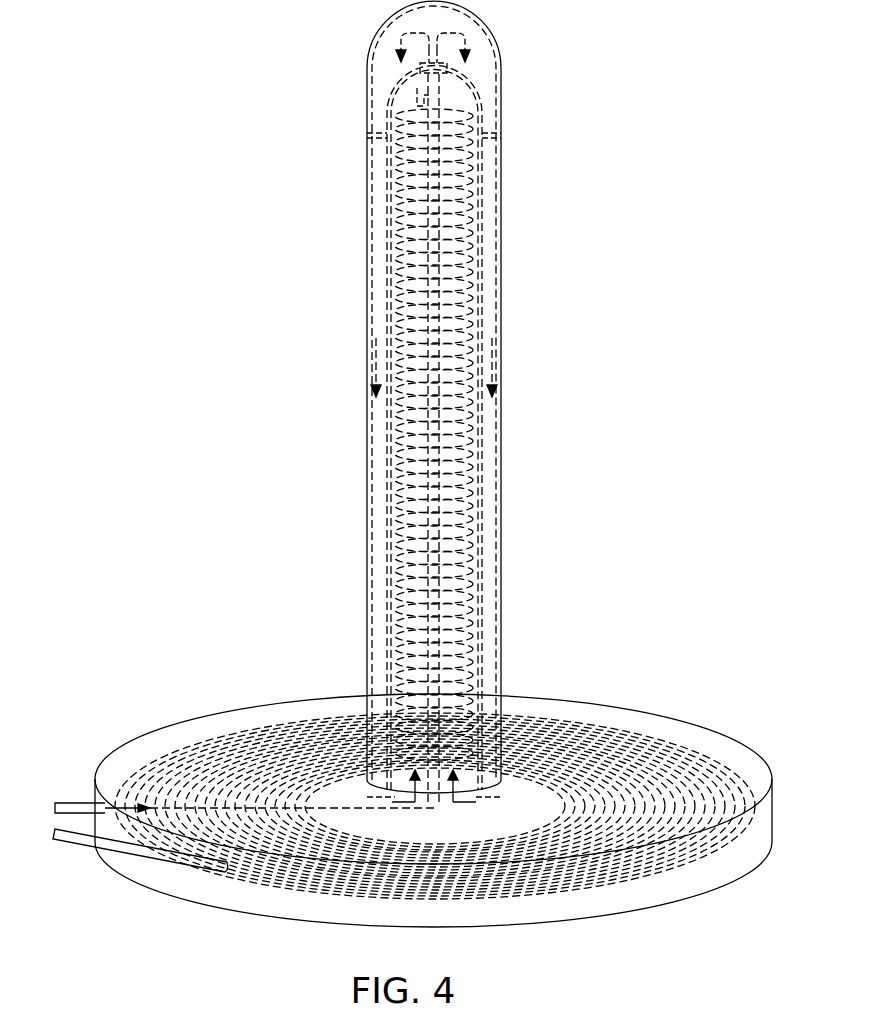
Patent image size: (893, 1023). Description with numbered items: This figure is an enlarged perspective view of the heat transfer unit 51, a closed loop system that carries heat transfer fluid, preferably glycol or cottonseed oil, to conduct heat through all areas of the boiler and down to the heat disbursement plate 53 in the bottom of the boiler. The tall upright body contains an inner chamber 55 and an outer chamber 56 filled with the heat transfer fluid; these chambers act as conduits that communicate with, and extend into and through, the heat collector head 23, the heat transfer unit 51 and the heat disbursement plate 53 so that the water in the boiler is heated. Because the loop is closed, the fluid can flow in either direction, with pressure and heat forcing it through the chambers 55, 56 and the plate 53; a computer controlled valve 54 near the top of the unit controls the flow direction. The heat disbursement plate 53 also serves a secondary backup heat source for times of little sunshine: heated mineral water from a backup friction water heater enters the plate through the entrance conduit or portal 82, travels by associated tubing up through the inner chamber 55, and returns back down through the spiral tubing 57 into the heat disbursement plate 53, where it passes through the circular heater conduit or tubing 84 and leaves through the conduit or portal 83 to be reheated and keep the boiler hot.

The heat collector head 23 is at (367, 101).
The heat transfer unit 51 is at (502, 330).
The heat disbursement plate 53 is at (658, 714).
The computer controlled valve 54 is at (448, 67).
The inner chamber 55 is at (474, 288).
The outer chamber 56 is at (490, 459).
The spiral tubing 57 is at (466, 572).
The entrance conduit or portal 82 is at (84, 805).
The conduit or portal 83 is at (82, 842).
The circular heater conduit or tubing 84 is at (187, 740).